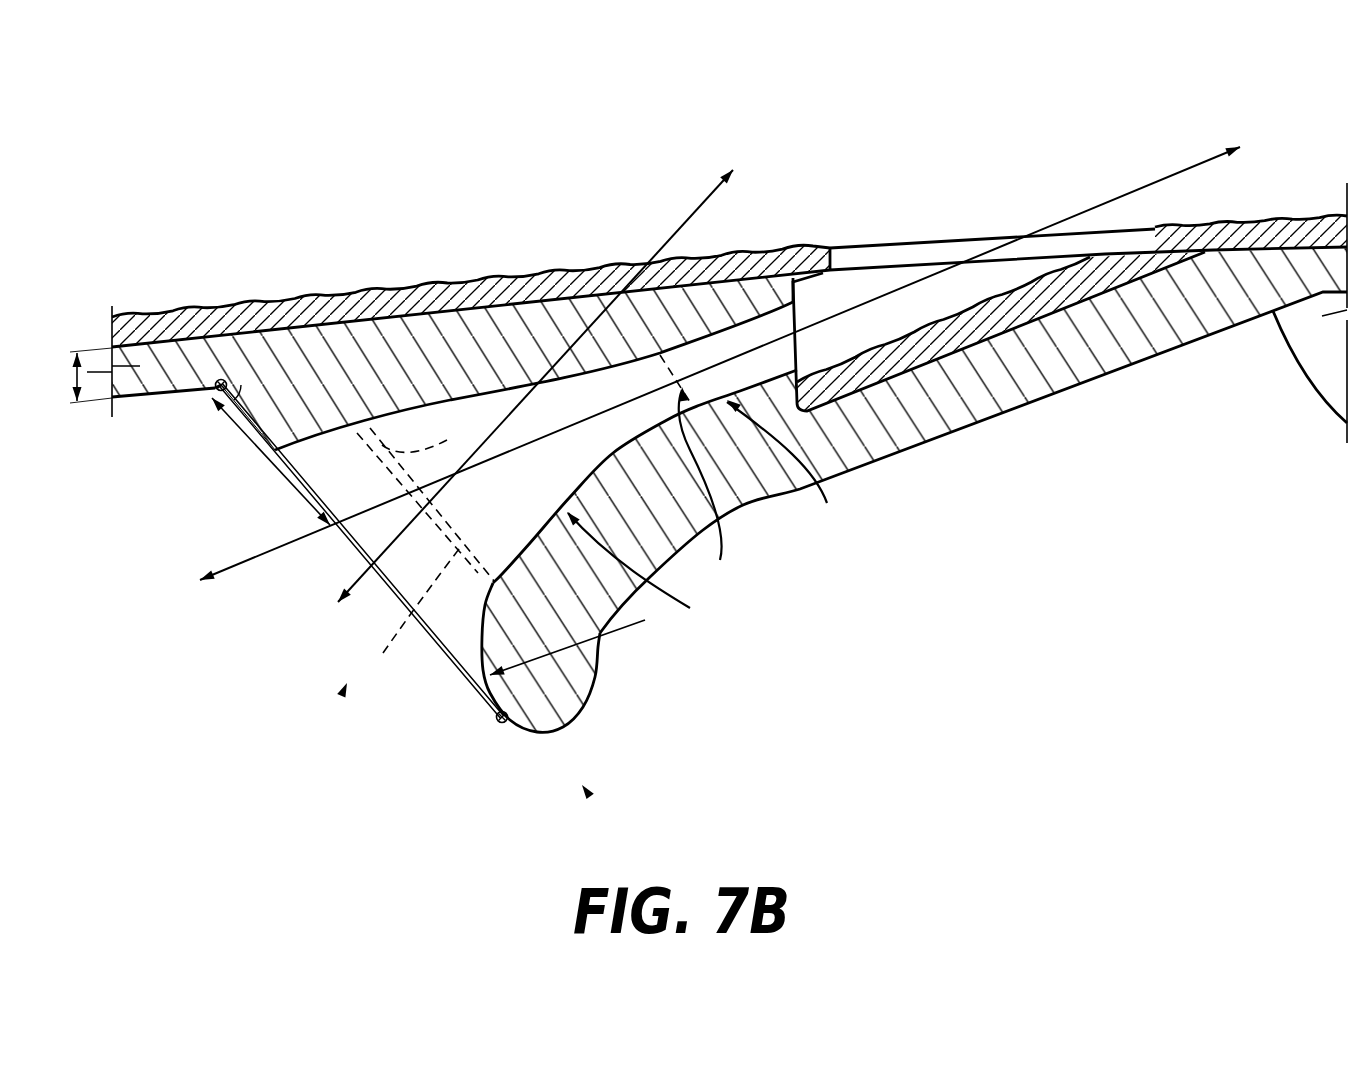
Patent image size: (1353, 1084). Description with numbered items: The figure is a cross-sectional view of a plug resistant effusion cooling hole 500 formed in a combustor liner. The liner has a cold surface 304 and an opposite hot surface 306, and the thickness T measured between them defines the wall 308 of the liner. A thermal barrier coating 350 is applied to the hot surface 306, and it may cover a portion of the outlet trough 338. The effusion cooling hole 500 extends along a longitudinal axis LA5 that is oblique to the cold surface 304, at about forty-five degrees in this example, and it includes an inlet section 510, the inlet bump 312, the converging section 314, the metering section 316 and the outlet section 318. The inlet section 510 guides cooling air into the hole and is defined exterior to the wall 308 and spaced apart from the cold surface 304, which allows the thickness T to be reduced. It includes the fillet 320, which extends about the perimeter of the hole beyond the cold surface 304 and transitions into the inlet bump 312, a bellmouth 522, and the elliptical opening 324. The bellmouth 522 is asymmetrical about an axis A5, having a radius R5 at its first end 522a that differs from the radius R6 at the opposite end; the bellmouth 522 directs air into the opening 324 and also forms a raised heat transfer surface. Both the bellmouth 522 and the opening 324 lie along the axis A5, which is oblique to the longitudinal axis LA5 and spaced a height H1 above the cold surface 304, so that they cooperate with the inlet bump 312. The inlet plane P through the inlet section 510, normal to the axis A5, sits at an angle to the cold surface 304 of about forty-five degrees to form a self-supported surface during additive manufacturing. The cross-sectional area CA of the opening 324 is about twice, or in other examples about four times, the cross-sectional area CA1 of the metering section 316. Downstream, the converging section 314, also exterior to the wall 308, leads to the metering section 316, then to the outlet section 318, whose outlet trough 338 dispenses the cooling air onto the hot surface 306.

The cold surface 304 is at (163, 397).
The hot surface 306 is at (157, 333).
The wall 308 is at (150, 372).
The inlet bump 312 is at (263, 447).
The converging section 314 is at (450, 390).
The metering section 316 is at (973, 462).
The outlet section 318 is at (1020, 232).
The fillet 320 is at (217, 393).
The opening 324 is at (534, 376).
The outlet trough 338 is at (903, 250).
The thermal barrier coating 350 is at (515, 283).
The effusion cooling hole 500 is at (584, 788).
The inlet section 510 is at (346, 686).
The bellmouth 522 is at (463, 670).
The first end 522a is at (567, 727).
The inlet plane P is at (508, 770).
The thickness T is at (77, 377).
The height H1 is at (282, 477).
The radius R5 is at (567, 647).
The radius R6 is at (287, 448).
The axis A5 is at (707, 195).
The longitudinal axis LA5 is at (1198, 160).
The cross-sectional area CA is at (424, 551).
The cross-sectional area CA1 is at (699, 473).